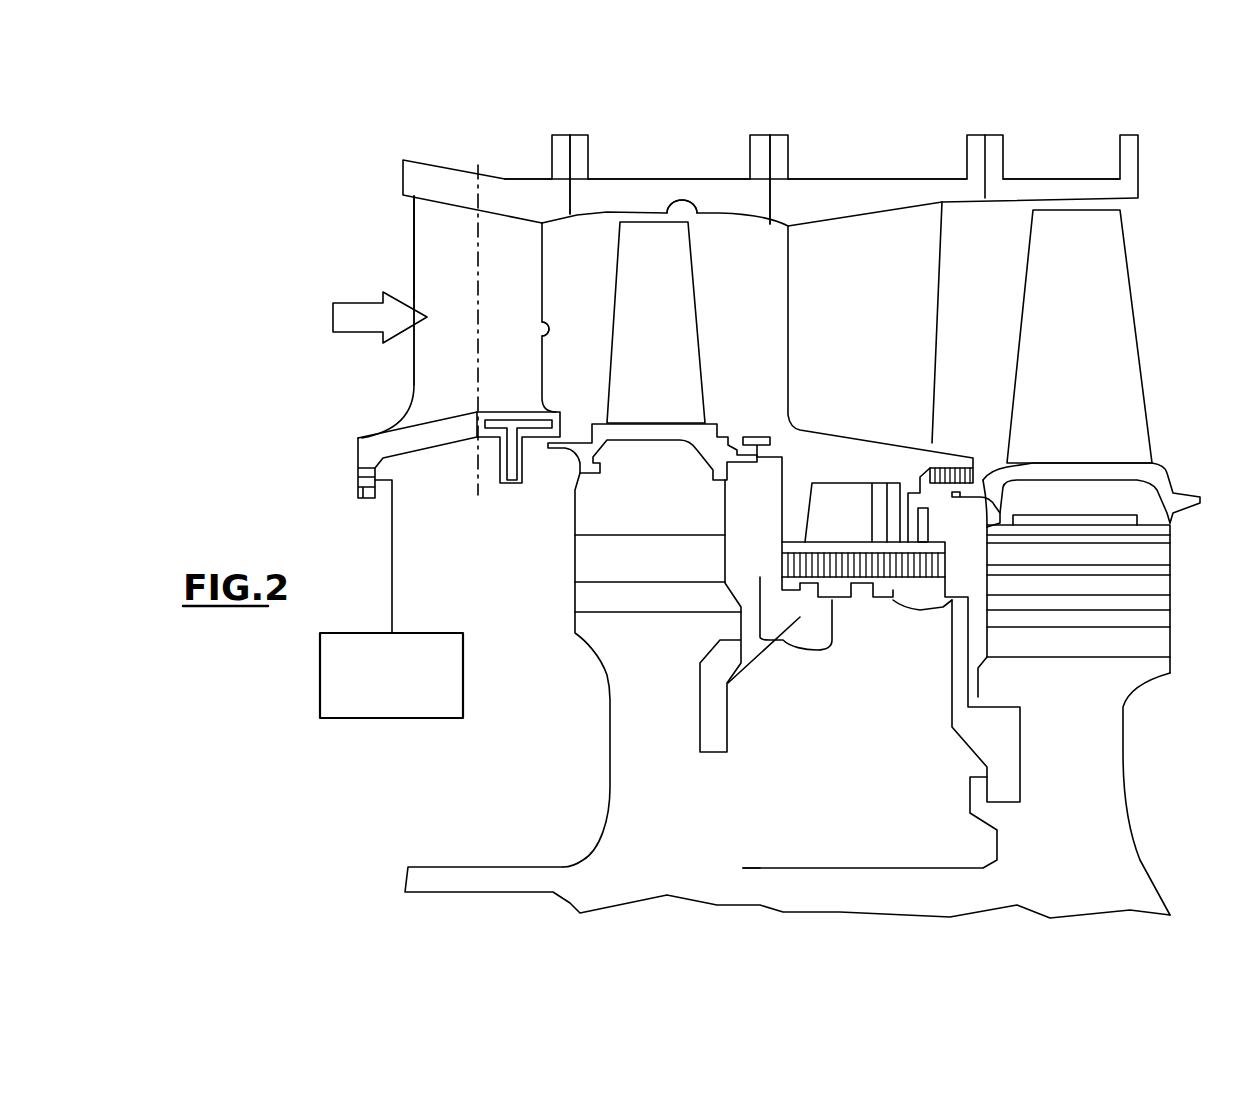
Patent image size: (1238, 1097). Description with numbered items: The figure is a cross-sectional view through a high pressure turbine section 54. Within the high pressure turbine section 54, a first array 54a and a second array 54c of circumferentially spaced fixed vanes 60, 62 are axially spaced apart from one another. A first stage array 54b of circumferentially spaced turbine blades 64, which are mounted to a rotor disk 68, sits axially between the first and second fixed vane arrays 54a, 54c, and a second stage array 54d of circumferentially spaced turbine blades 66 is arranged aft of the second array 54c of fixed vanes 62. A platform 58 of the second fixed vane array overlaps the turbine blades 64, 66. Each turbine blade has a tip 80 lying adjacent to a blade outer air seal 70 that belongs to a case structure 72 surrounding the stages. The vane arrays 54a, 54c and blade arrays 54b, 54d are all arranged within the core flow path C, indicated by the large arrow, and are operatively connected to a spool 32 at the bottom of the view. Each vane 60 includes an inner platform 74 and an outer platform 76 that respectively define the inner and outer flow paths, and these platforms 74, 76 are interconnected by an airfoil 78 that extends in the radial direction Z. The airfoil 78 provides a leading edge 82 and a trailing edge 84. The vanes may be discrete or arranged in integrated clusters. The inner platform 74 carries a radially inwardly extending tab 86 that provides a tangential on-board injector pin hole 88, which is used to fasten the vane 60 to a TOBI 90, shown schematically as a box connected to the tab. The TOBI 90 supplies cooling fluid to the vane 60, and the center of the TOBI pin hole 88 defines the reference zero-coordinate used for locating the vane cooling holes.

The spool 32 is at (407, 882).
The high pressure turbine section 54 is at (903, 114).
The first array of fixed vanes 54a is at (470, 166).
The first stage array of turbine blades 54b is at (672, 174).
The second array of fixed vanes 54c is at (829, 178).
The second stage array of turbine blades 54d is at (1057, 178).
The platform 58 is at (752, 440).
The fixed vane 60 is at (408, 289).
The fixed vane 62 is at (789, 272).
The turbine blade 64 is at (613, 298).
The turbine blade 66 is at (1016, 310).
The rotor disk 68 is at (688, 805).
The blade outer air seal 70 is at (603, 195).
The case structure 72 is at (760, 157).
The inner platform 74 is at (428, 437).
The outer platform 76 is at (436, 193).
The airfoil 78 is at (486, 252).
The tip 80 is at (687, 203).
The leading edge 82 is at (413, 240).
The trailing edge 84 is at (545, 330).
The tab 86 is at (370, 453).
The TOBI pin hole 88 is at (372, 498).
The TOBI 90 is at (340, 718).
The core flow path C is at (360, 327).
The radial direction Z is at (478, 385).